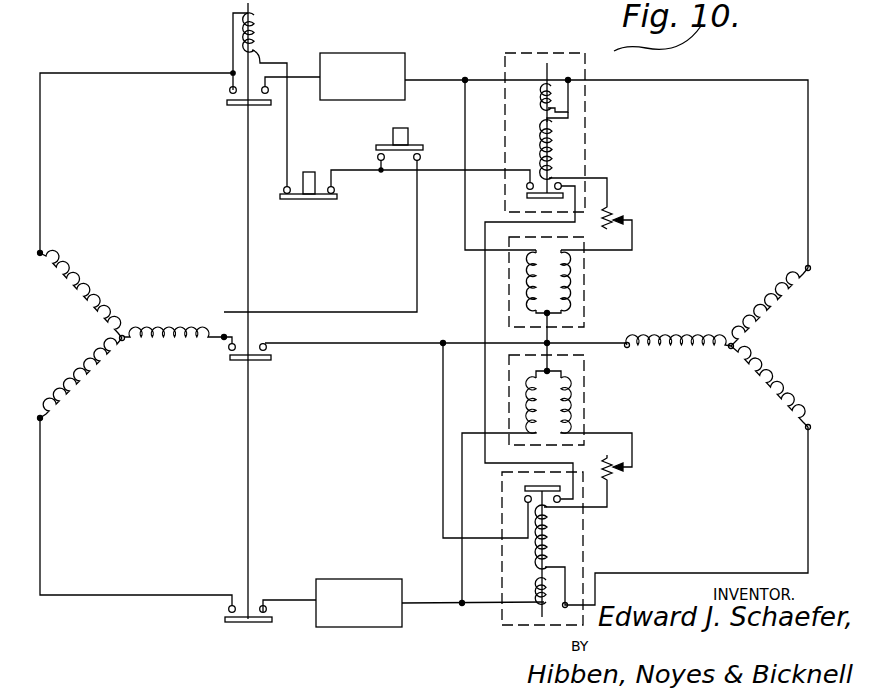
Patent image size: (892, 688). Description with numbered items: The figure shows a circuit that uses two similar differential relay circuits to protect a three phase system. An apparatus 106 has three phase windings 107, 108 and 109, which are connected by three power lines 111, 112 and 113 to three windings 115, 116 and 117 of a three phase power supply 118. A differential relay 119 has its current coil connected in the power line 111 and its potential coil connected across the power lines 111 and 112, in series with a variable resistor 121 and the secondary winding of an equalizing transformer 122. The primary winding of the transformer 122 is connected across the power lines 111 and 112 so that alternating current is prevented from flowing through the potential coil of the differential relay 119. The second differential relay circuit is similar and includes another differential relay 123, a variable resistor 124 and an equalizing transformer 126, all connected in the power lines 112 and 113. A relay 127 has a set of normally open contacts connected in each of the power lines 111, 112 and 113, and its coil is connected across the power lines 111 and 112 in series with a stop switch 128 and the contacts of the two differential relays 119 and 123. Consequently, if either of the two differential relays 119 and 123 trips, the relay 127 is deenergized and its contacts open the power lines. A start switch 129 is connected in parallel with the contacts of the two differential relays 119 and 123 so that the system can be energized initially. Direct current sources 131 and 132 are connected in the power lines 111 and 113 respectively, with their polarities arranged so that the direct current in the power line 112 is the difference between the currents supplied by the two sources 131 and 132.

The apparatus 106 is at (731, 354).
The phase winding 107 is at (789, 299).
The phase winding 108 is at (692, 323).
The phase winding 109 is at (768, 395).
The power line 111 is at (147, 77).
The power line 112 is at (219, 332).
The power line 113 is at (179, 596).
The winding 115 is at (78, 283).
The winding 116 is at (173, 305).
The winding 117 is at (88, 384).
The three phase power supply 118 is at (131, 348).
The differential relay 119 is at (514, 48).
The variable resistor 121 is at (614, 208).
The equalizing transformer 122 is at (648, 290).
The differential relay 123 is at (590, 556).
The variable resistor 124 is at (688, 493).
The equalizing transformer 126 is at (587, 398).
The relay 127 is at (340, 25).
The stop switch 128 is at (301, 208).
The start switch 129 is at (372, 135).
The direct current source 131 is at (420, 35).
The direct current source 132 is at (380, 558).